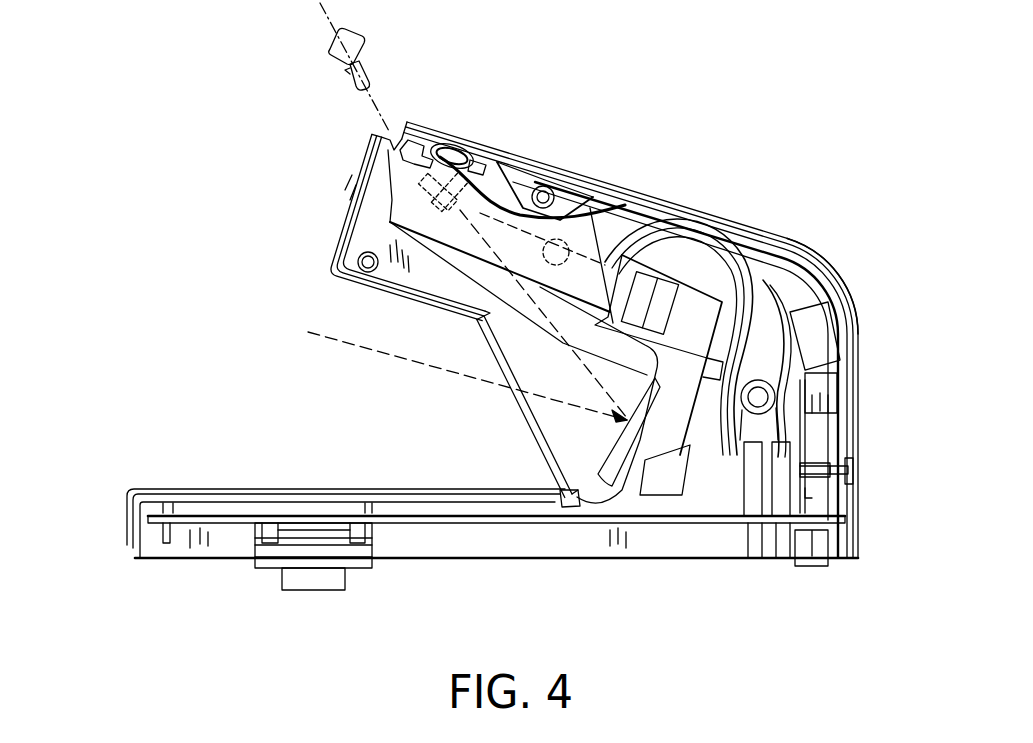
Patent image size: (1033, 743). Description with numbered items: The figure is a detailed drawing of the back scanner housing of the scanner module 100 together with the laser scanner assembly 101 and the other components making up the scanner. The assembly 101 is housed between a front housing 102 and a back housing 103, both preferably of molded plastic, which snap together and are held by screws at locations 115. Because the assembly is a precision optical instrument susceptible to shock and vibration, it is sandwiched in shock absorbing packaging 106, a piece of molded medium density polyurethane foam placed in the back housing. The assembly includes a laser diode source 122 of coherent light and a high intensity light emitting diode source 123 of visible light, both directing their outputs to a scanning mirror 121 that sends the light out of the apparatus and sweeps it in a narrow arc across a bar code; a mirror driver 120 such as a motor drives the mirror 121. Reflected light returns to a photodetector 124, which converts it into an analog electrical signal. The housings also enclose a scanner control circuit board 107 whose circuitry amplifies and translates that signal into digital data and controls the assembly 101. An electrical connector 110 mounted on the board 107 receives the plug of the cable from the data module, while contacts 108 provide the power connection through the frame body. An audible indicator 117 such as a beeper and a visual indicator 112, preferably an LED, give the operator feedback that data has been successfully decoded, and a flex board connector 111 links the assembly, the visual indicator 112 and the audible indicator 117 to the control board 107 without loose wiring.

The scanner module 100 is at (684, 122).
The laser scanner assembly 101 is at (662, 196).
The front housing 102 is at (358, 191).
The back housing 103 is at (812, 254).
The shock absorbing packaging 106 is at (700, 265).
The scanner control circuit board 107 is at (436, 523).
The contacts 108 is at (777, 560).
The electrical connector 110 is at (292, 550).
The flex board connector 111 is at (820, 437).
The visual indicator 112 is at (862, 470).
The screw locations 115 is at (548, 186).
The audible indicator 117 is at (838, 326).
The mirror driver 120 is at (713, 300).
The scanning mirror 121 is at (618, 444).
The laser diode source 122 is at (471, 147).
The light emitting diode source 123 is at (608, 255).
The photodetector 124 is at (431, 140).